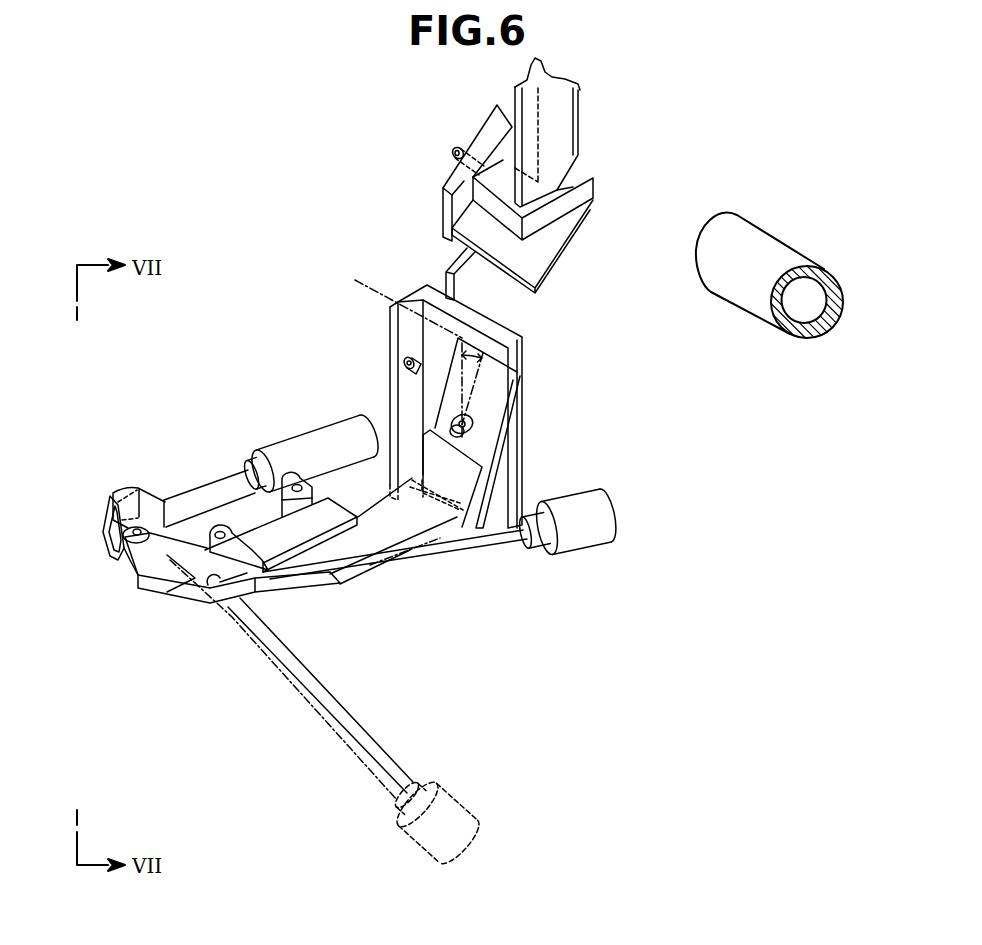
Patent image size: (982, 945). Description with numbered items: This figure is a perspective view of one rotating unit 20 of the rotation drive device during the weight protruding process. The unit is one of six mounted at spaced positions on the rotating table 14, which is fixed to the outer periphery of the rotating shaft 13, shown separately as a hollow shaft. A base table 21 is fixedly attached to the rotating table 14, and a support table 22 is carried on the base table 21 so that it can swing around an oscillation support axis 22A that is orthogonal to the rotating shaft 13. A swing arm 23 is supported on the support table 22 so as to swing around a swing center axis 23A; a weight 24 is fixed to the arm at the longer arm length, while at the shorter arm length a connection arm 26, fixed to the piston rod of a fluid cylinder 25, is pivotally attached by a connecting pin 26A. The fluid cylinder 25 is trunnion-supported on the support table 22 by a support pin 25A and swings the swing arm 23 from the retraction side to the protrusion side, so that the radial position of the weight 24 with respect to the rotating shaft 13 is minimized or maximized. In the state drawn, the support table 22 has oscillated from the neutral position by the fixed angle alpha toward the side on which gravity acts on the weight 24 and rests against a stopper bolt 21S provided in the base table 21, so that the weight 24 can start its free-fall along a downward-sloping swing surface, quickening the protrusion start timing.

The rotating shaft 13 is at (768, 244).
The rotating table 14 is at (452, 265).
The rotating unit 20 is at (214, 410).
The base table 21 is at (501, 327).
The stopper bolt 21S is at (403, 365).
The support table 22 is at (457, 474).
The oscillation support axis 22A is at (472, 421).
The swing arm 23 is at (160, 592).
The swing center axis 23A is at (220, 530).
The weight 24 is at (582, 543).
The fluid cylinder 25 is at (345, 430).
The support pin 25A is at (296, 484).
The connection arm 26 is at (118, 492).
The connecting pin 26A is at (128, 580).